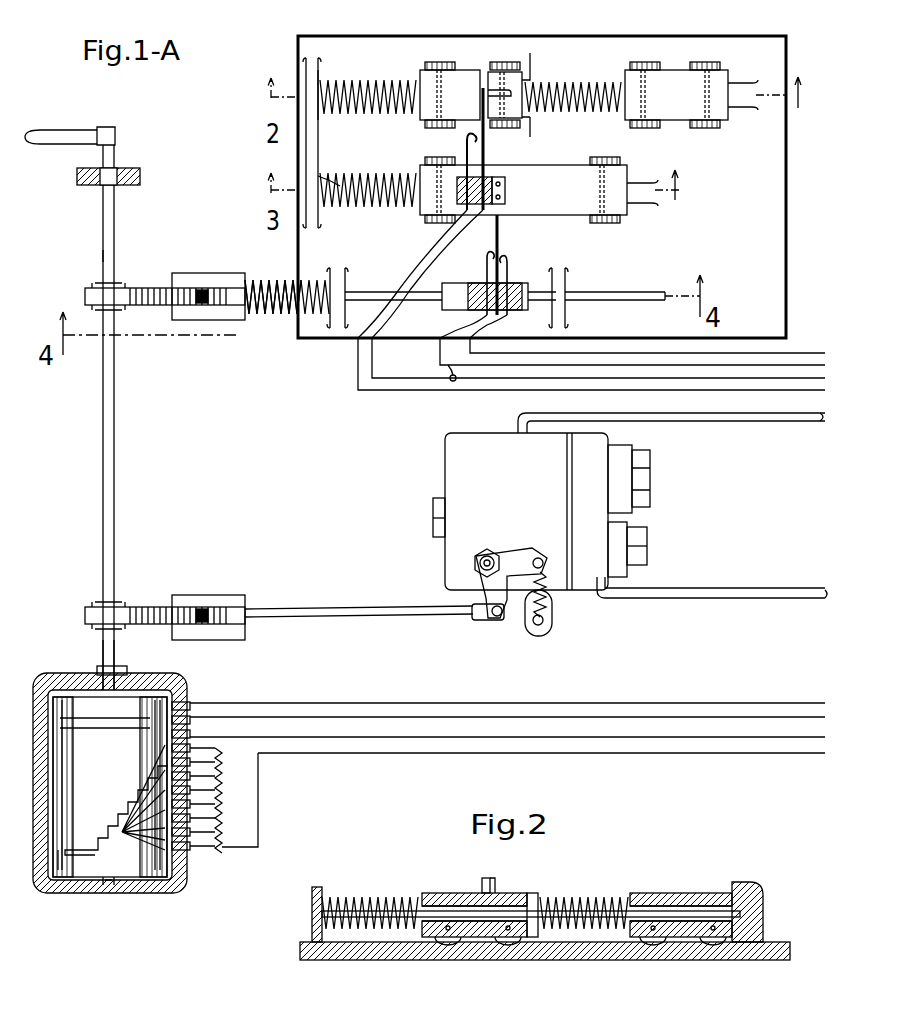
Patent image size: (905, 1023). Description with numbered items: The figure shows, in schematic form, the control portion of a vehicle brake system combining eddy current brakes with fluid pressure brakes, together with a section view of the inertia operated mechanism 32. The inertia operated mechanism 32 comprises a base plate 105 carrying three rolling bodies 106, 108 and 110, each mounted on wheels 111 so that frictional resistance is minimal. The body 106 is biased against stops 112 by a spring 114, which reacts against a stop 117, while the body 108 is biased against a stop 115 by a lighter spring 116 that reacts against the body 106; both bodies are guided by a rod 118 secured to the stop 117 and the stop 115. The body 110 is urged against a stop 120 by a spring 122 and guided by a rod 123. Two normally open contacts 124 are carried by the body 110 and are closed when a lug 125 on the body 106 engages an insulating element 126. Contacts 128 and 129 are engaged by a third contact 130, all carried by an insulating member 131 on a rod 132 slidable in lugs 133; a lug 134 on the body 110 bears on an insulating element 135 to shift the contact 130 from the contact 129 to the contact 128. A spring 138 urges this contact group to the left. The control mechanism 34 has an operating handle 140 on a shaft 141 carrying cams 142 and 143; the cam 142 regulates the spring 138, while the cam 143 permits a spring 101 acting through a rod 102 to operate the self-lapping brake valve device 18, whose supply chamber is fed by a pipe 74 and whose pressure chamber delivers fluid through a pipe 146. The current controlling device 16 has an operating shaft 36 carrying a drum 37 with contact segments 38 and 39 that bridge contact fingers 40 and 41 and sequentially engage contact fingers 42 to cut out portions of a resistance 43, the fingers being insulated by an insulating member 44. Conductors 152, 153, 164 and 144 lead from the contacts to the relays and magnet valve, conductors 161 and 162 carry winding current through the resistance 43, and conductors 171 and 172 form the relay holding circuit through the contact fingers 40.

In FIG. 1A, the current controlling device 16 is at (194, 681).
In FIG. 1A, the self-lapping brake valve device 18 is at (436, 461).
In FIG. 1A, the inertia operated mechanism 32 is at (790, 30).
In FIG. 1A, the control mechanism 34 is at (93, 259).
In FIG. 1A, the operating shaft 36 is at (108, 645).
In FIG. 1A, the drum 37 is at (96, 870).
In FIG. 1A, the contact segment 38 is at (59, 702).
In FIG. 1A, the contact segment 39 is at (62, 852).
In FIG. 1A, the contact fingers 40 is at (186, 712).
In FIG. 1A, the contact fingers 41 is at (188, 740).
In FIG. 1A, the contact fingers 42 is at (116, 805).
In FIG. 1A, the resistance 43 is at (215, 790).
In FIG. 1A, the insulating member 44 is at (190, 850).
In FIG. 1A, the pipe 74 is at (740, 578).
In FIG. 1A, the spring 101 is at (550, 615).
In FIG. 1A, the rod 102 is at (347, 610).
In FIG. 1A, the base plate 105 is at (368, 24).
In FIG. 2, the base plate 105 is at (388, 960).
In FIG. 1A, the rolling body 106 is at (458, 72).
In FIG. 2, the rolling body 106 is at (472, 878).
In FIG. 1A, the rolling body 108 is at (672, 78).
In FIG. 2, the rolling body 108 is at (647, 872).
In FIG. 1A, the rolling body 110 is at (530, 175).
In FIG. 1A, the wheels 111 is at (432, 62).
In FIG. 2, the wheels 111 is at (508, 945).
In FIG. 1A, the stops 112 is at (548, 88).
In FIG. 1A, the spring 114 is at (320, 75).
In FIG. 2, the spring 114 is at (352, 903).
In FIG. 1A, the stop 115 is at (738, 85).
In FIG. 2, the stop 115 is at (758, 872).
In FIG. 1A, the spring 116 is at (585, 66).
In FIG. 2, the spring 116 is at (568, 905).
In FIG. 1A, the stop 117 is at (304, 150).
In FIG. 2, the stop 117 is at (330, 872).
In FIG. 1A, the rod 118 is at (378, 112).
In FIG. 2, the rod 118 is at (390, 911).
In FIG. 1A, the stop 120 is at (640, 182).
In FIG. 1A, the spring 122 is at (318, 176).
In FIG. 1A, the rod 123 is at (362, 210).
In FIG. 1A, the contacts 124 is at (472, 150).
In FIG. 1A, the lug 125 is at (500, 90).
In FIG. 2, the lug 125 is at (490, 878).
In FIG. 1A, the insulating element 126 is at (484, 88).
In FIG. 1A, the contact 128 is at (486, 265).
In FIG. 1A, the contact 129 is at (512, 268).
In FIG. 1A, the contact 130 is at (500, 248).
In FIG. 1A, the insulating member 131 is at (520, 312).
In FIG. 1A, the rod 132 is at (607, 295).
In FIG. 1A, the lugs 133 is at (340, 280).
In FIG. 1A, the lug 134 is at (523, 232).
In FIG. 1A, the insulating element 135 is at (505, 225).
In FIG. 1A, the spring 138 is at (262, 280).
In FIG. 1A, the operating handle 140 is at (80, 115).
In FIG. 1A, the shaft 141 is at (103, 224).
In FIG. 1A, the cam 142 is at (138, 292).
In FIG. 1A, the cam 143 is at (133, 613).
In FIG. 1A, the conductor 144 is at (742, 406).
In FIG. 1A, the pipe 146 is at (747, 422).
In FIG. 1A, the conductor 152 is at (660, 375).
In FIG. 1A, the conductor 153 is at (808, 338).
In FIG. 1A, the conductor 161 is at (728, 740).
In FIG. 1A, the conductors 162 is at (758, 755).
In FIG. 1A, the conductor 164 is at (765, 363).
In FIG. 1A, the conductor 171 is at (790, 717).
In FIG. 1A, the conductor 172 is at (744, 695).